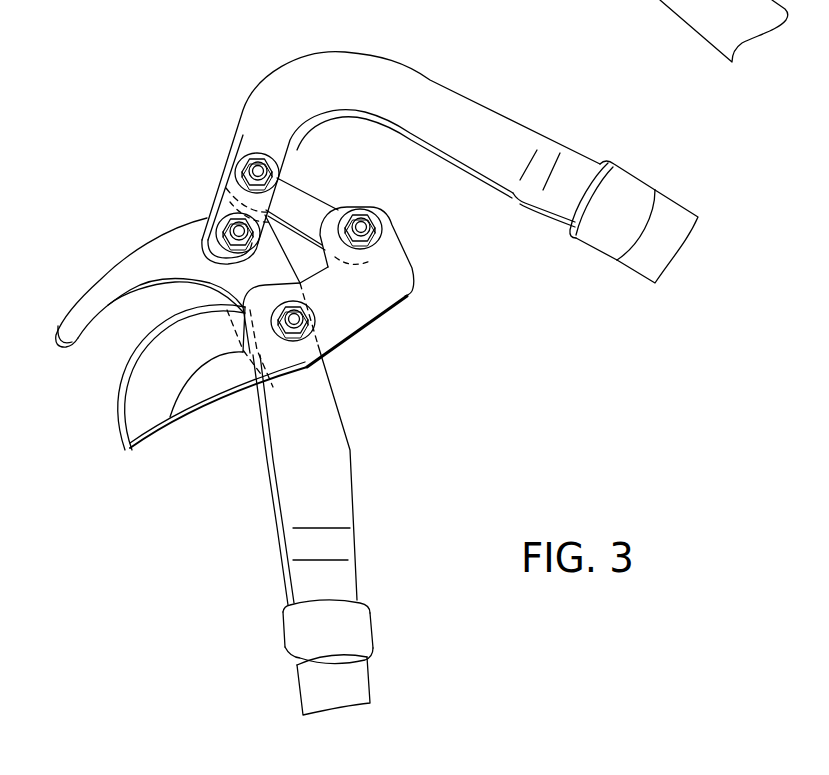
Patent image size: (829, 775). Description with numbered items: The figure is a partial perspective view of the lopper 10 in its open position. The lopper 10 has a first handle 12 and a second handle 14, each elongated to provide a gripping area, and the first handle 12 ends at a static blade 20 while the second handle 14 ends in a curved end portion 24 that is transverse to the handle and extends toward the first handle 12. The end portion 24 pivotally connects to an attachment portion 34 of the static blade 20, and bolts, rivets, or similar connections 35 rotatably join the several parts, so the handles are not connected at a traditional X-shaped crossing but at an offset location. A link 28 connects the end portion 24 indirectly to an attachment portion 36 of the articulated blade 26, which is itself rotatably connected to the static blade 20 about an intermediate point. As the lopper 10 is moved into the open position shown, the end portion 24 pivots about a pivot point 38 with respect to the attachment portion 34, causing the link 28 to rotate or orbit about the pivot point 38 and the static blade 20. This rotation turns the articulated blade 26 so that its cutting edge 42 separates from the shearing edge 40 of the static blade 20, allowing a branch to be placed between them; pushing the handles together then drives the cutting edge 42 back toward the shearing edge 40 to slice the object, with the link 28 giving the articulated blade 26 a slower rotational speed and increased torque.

The lopper 10 is at (123, 117).
The first handle 12 is at (350, 693).
The second handle 14 is at (673, 222).
The static blade 20 is at (117, 274).
The curved end portion 24 is at (360, 75).
The articulated blade 26 is at (198, 388).
The link 28 is at (298, 208).
The attachment portion of the static blade 34 is at (185, 242).
The connections 35 is at (375, 235).
The attachment portion of the articulated blade 36 is at (382, 288).
The pivot point 38 is at (220, 216).
The shearing edge 40 is at (110, 307).
The cutting edge 42 is at (120, 380).